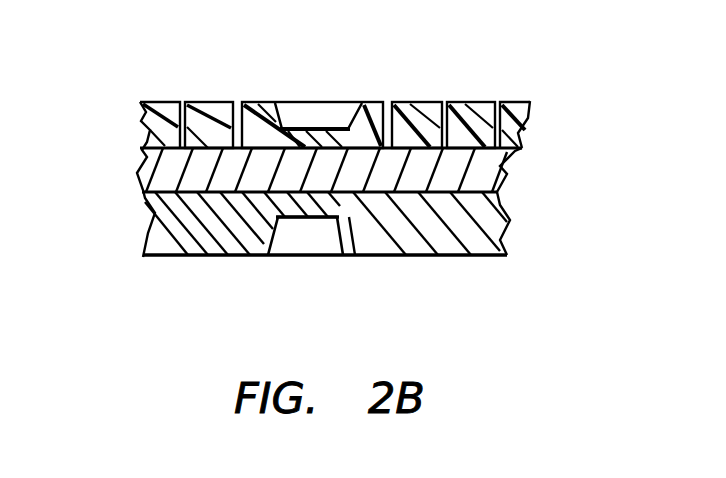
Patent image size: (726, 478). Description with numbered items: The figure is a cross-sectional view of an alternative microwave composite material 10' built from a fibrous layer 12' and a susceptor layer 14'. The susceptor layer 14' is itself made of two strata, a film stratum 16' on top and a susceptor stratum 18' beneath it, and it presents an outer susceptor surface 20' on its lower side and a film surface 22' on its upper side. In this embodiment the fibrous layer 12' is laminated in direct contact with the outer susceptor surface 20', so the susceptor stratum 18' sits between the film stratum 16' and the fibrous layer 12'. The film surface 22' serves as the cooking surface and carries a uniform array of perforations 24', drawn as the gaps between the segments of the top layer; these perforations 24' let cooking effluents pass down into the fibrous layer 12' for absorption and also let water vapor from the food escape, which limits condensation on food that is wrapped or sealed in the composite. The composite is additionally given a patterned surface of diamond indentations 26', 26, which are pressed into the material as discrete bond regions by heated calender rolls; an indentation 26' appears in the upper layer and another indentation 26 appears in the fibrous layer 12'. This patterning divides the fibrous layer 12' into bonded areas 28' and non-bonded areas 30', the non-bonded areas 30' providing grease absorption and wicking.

The microwave composite material 10' is at (355, 182).
The fibrous layer 12' is at (379, 260).
The susceptor layer 14' is at (397, 92).
The film stratum 16' is at (509, 95).
The susceptor stratum 18' is at (383, 170).
The outer susceptor surface 20' is at (105, 179).
The film surface 22' is at (242, 97).
The perforations 24' is at (433, 92).
The diamond indentation 26' is at (328, 91).
The diamond indentation 26 is at (309, 270).
The bonded area 28' is at (386, 272).
The non-bonded area 30' is at (342, 287).